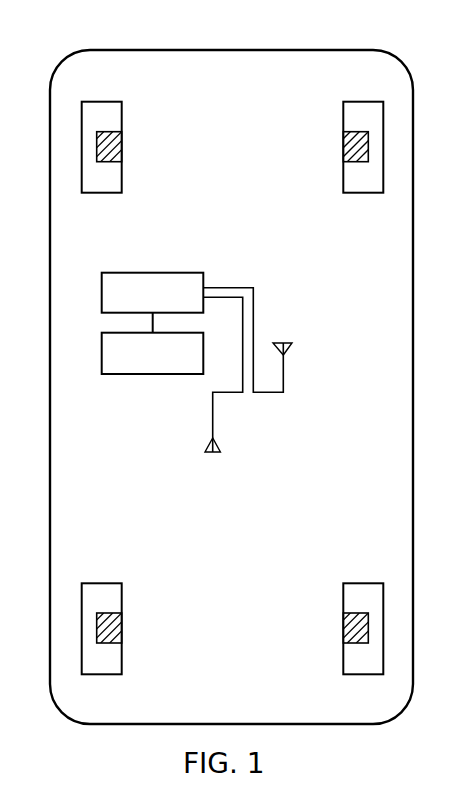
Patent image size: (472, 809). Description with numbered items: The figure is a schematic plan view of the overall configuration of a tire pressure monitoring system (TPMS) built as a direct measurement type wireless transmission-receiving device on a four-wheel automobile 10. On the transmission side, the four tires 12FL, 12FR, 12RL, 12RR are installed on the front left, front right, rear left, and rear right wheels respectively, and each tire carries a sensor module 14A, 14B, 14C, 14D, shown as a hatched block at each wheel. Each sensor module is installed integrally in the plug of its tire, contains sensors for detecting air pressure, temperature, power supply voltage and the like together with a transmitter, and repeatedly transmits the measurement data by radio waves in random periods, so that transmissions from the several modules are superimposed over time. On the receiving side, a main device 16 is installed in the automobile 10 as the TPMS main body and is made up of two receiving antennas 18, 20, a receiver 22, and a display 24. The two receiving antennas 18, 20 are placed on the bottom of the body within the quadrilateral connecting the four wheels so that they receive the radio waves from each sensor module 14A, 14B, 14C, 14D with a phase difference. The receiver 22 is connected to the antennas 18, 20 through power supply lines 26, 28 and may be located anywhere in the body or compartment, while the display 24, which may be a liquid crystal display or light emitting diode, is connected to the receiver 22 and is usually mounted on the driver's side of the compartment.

The four-wheel automobile 10 is at (180, 48).
The tire 12FL is at (128, 116).
The tire 12FR is at (337, 116).
The tire 12RL is at (128, 659).
The tire 12RR is at (337, 659).
The sensor module 14A is at (106, 163).
The sensor module 14B is at (348, 162).
The sensor module 14C is at (108, 613).
The sensor module 14D is at (352, 613).
The main device 16 is at (233, 363).
The receiving antenna 18 is at (210, 455).
The receiving antenna 20 is at (285, 343).
The receiver 22 is at (142, 272).
The display 24 is at (142, 374).
The power supply line 26 is at (212, 417).
The power supply line 28 is at (265, 393).